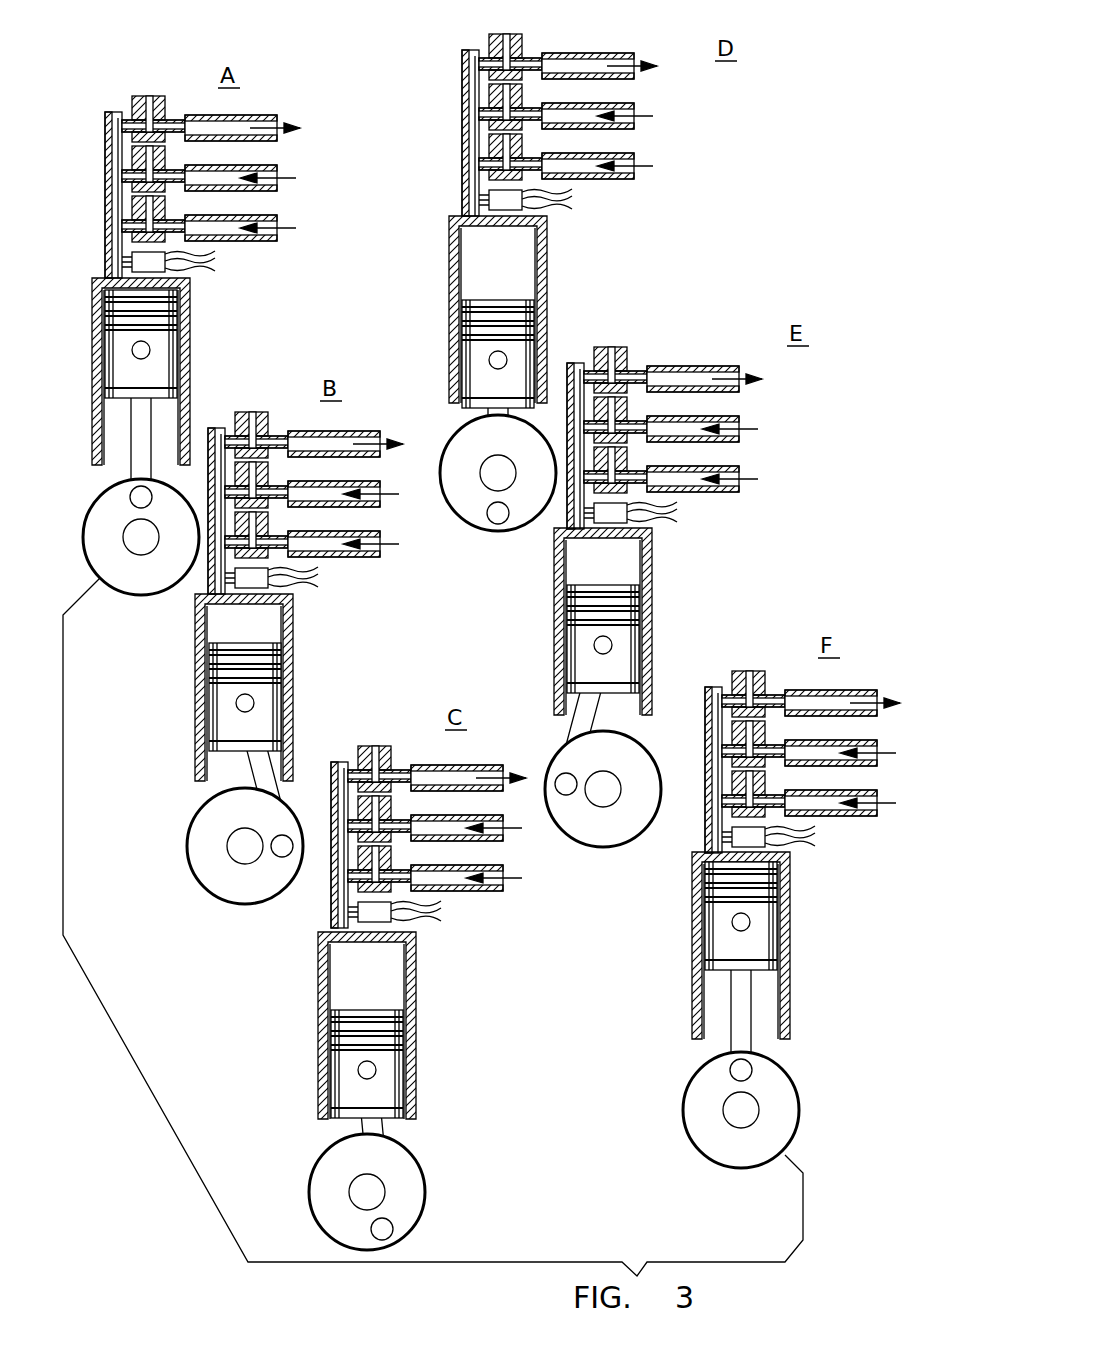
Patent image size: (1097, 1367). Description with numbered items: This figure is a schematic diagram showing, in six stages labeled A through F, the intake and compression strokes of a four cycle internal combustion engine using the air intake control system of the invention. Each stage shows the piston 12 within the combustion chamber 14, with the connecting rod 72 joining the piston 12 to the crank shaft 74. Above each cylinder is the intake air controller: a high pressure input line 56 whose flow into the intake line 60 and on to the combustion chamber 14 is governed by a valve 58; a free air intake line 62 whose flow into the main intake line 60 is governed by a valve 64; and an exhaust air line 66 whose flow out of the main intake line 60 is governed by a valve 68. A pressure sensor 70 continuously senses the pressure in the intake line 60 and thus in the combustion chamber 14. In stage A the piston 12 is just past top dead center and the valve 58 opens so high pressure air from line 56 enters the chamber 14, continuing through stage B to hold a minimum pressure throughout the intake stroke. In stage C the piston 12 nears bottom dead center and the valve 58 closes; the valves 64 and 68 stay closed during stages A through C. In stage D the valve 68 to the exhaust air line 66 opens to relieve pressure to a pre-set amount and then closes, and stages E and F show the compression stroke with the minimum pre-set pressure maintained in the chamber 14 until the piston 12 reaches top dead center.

The piston 12 is at (413, 704).
The combustion chamber 14 is at (441, 667).
The high pressure input line 56 is at (544, 510).
The valve 58 is at (463, 510).
The intake line 60 is at (391, 489).
The free air intake line 62 is at (547, 461).
The valve 64 is at (462, 461).
The exhaust air line 66 is at (542, 406).
The valve 68 is at (453, 405).
The pressure sensor 70 is at (491, 561).
The connecting rod 72 is at (447, 790).
The crank shaft 74 is at (428, 832).